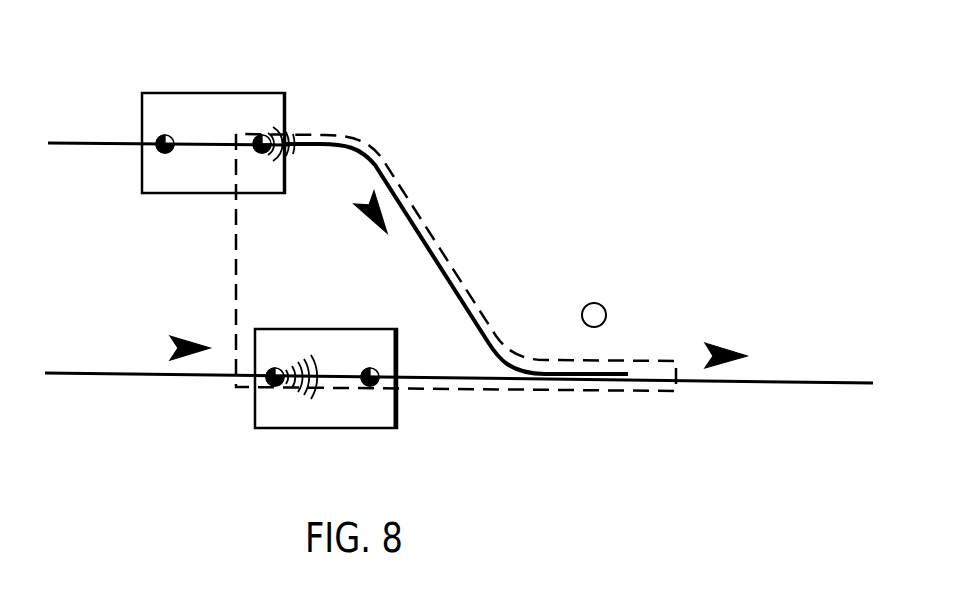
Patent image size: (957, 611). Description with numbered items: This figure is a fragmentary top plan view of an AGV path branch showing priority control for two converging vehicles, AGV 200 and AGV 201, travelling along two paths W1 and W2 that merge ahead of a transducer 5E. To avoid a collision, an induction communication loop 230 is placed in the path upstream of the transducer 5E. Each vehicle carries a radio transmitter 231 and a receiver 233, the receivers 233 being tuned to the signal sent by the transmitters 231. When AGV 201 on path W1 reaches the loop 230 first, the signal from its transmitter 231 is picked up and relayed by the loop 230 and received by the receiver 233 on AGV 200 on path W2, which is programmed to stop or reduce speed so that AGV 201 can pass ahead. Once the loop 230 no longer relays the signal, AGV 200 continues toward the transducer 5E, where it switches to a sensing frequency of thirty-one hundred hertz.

The AGV 200 is at (193, 105).
The AGV 201 is at (291, 415).
The induction communication loop 230 is at (414, 262).
The radio transmitter 231 is at (160, 138).
The receiver 233 is at (261, 141).
The first web W1 is at (773, 383).
The second web W2 is at (431, 247).
The transducer 5E is at (600, 304).